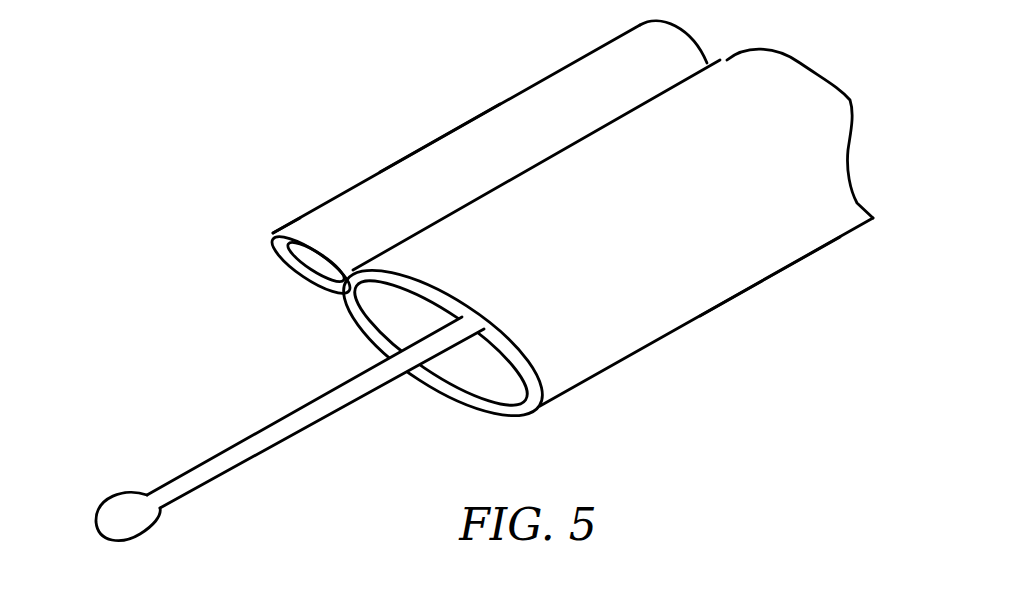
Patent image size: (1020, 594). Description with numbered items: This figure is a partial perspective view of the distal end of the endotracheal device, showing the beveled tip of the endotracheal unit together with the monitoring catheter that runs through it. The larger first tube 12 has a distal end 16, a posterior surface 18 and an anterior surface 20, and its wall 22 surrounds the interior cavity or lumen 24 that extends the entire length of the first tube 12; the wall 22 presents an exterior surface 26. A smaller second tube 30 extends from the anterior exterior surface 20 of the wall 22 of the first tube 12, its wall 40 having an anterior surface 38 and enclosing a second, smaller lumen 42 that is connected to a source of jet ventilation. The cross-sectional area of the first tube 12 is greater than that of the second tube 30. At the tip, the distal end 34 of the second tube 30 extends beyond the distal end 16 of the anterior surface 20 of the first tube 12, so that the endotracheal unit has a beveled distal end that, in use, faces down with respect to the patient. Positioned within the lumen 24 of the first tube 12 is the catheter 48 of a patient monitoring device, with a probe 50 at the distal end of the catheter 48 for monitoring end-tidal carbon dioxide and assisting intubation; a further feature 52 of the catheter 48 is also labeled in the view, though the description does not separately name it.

The first tube 12 is at (818, 108).
The distal end 16 is at (562, 397).
The posterior surface 18 is at (777, 272).
The anterior surface 20 is at (732, 92).
The wall 22 is at (480, 415).
The lumen 24 is at (625, 150).
The exterior surface 26 is at (473, 203).
The second tube 30 is at (370, 177).
The distal end 34 is at (288, 227).
The anterior surface 38 is at (442, 137).
The wall 40 is at (273, 238).
The lumen 42 is at (324, 263).
The catheter 48 is at (232, 470).
The probe 50 is at (125, 508).
The wire shaft 52 is at (238, 443).